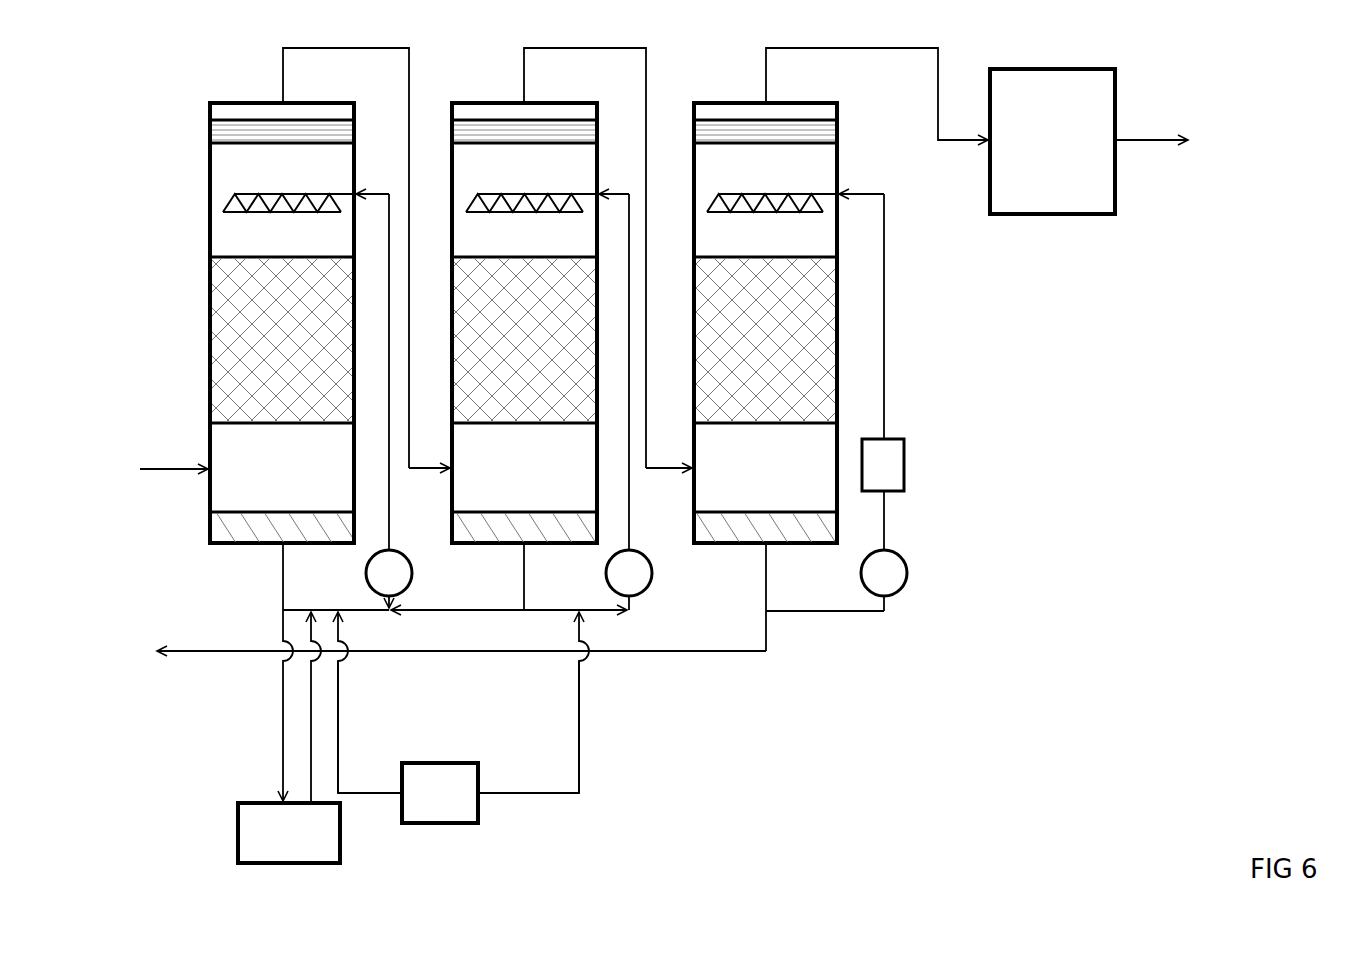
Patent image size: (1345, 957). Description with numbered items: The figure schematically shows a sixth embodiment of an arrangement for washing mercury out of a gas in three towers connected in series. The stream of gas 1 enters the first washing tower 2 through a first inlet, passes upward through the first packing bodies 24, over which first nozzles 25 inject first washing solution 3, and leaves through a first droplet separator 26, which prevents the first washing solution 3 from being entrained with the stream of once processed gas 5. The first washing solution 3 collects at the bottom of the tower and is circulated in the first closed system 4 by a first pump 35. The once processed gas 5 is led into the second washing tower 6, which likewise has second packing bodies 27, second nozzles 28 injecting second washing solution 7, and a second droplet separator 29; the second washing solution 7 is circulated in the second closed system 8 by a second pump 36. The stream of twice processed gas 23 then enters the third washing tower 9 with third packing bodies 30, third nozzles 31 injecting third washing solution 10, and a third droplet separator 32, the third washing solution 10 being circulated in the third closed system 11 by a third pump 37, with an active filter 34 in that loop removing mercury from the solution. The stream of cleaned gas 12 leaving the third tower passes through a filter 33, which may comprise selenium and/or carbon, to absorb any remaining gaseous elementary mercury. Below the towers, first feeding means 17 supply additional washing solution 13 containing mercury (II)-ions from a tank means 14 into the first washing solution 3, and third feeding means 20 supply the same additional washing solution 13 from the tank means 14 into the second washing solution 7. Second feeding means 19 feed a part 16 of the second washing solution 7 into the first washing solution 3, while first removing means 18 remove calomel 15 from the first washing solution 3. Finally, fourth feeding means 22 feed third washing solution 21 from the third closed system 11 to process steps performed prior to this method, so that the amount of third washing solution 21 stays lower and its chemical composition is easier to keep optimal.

The stream of gas 1 is at (174, 451).
The first washing tower 2 is at (208, 346).
The first washing solution 3 is at (183, 525).
The first closed system 4 is at (402, 192).
The stream of once processed gas 5 is at (429, 451).
The second washing tower 6 is at (450, 345).
The second washing solution 7 is at (412, 527).
The second closed system 8 is at (640, 194).
The third washing tower 9 is at (692, 345).
The third washing solution 10 is at (668, 527).
The third closed system 11 is at (886, 207).
The stream of cleaned gas 12 is at (1063, 119).
The additional washing solution containing mercury (II)-ions 13 is at (467, 707).
The tank means 14 is at (457, 805).
The calomel 15 is at (289, 818).
The part of the second washing solution 16 is at (403, 418).
The first feeding means 17 is at (340, 748).
The first removing means 18 is at (283, 753).
The second feeding means 19 is at (458, 610).
The third feeding means 20 is at (580, 770).
The third washing solution 21 is at (461, 597).
The fourth feeding means 22 is at (229, 655).
The stream of twice processed gas 23 is at (669, 449).
The first packing bodies 24 is at (225, 392).
The first nozzles 25 is at (238, 200).
The first droplet separator 26 is at (248, 132).
The second packing bodies 27 is at (470, 386).
The second nozzles 28 is at (487, 203).
The second droplet separator 29 is at (462, 131).
The third packing bodies 30 is at (712, 378).
The third nozzles 31 is at (727, 202).
The third droplet separator 32 is at (704, 131).
The filter 33 is at (1064, 148).
The active filter 34 is at (906, 485).
The first pump 35 is at (366, 577).
The second pump 36 is at (653, 573).
The third pump 37 is at (908, 575).